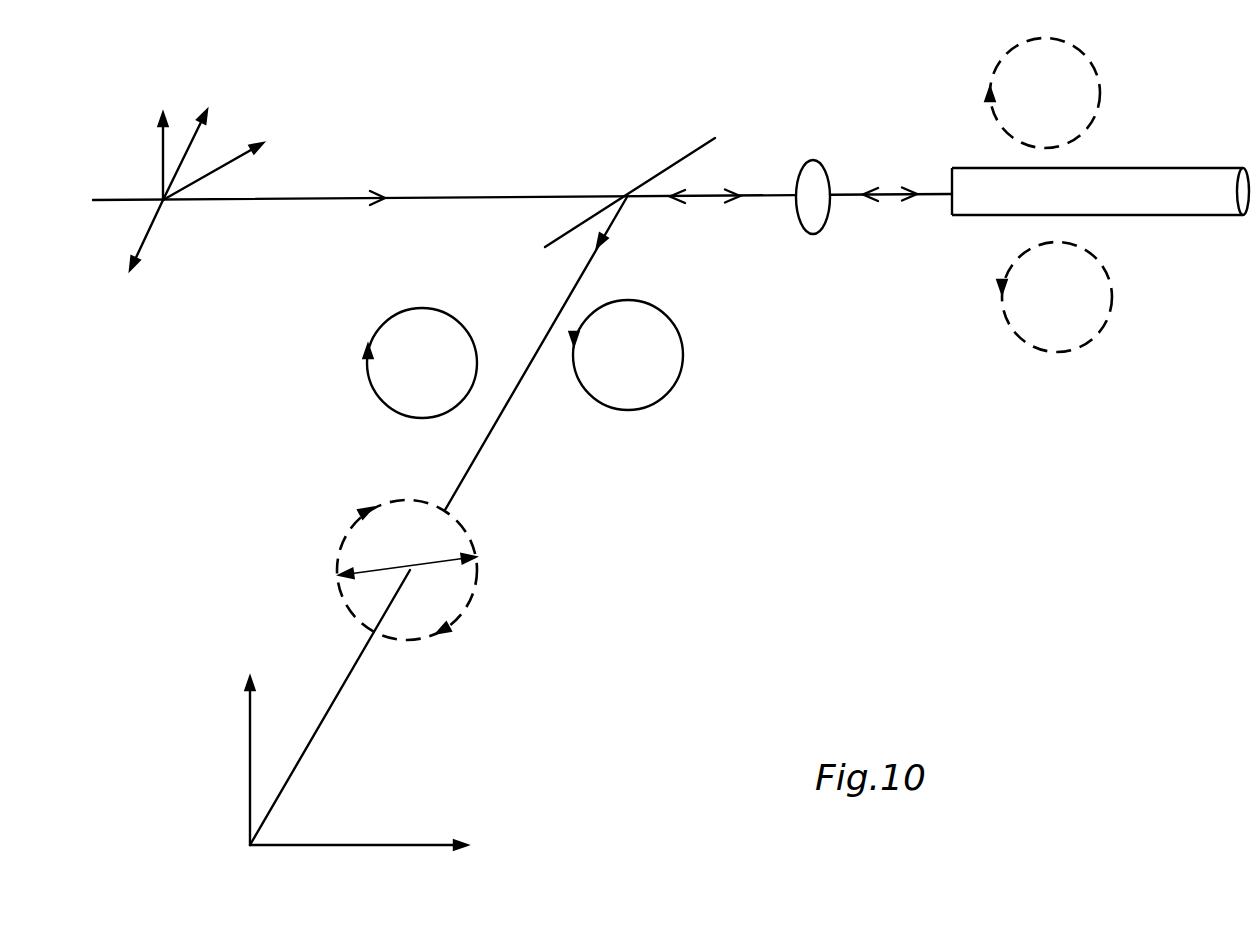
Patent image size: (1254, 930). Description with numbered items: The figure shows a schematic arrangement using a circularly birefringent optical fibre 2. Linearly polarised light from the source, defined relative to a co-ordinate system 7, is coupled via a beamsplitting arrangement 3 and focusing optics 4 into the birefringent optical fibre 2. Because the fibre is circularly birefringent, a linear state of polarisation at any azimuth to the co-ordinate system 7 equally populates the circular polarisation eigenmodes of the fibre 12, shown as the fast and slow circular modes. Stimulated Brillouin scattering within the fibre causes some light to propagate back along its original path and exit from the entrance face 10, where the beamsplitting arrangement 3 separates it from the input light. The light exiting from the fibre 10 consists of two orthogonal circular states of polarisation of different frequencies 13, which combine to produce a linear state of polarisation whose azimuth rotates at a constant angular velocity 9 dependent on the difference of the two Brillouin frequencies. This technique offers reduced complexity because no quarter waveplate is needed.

The birefringent optical fibre 2 is at (1100, 161).
The beamsplitting arrangement 3 is at (630, 173).
The focusing optics 4 is at (818, 167).
The co-ordinate system 7 is at (308, 461).
The angular velocity 9 is at (477, 617).
The entrance face 10 is at (940, 206).
The circular polarisation eigenmodes of the fibre 12 is at (1070, 243).
The orthogonal circular states of polarisation of different frequencies 13 is at (476, 321).